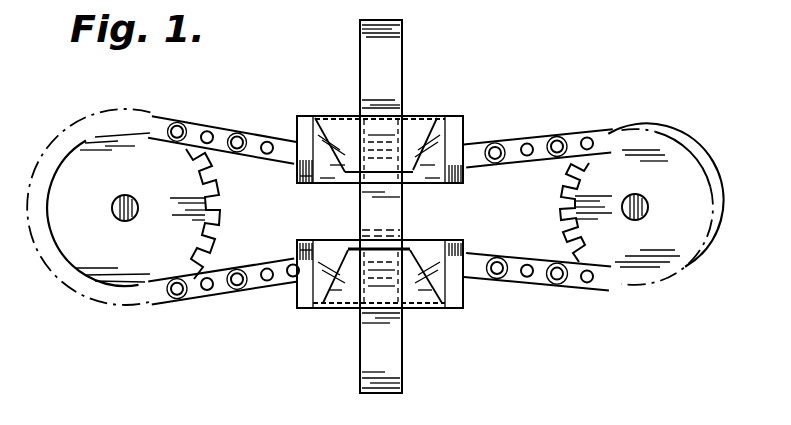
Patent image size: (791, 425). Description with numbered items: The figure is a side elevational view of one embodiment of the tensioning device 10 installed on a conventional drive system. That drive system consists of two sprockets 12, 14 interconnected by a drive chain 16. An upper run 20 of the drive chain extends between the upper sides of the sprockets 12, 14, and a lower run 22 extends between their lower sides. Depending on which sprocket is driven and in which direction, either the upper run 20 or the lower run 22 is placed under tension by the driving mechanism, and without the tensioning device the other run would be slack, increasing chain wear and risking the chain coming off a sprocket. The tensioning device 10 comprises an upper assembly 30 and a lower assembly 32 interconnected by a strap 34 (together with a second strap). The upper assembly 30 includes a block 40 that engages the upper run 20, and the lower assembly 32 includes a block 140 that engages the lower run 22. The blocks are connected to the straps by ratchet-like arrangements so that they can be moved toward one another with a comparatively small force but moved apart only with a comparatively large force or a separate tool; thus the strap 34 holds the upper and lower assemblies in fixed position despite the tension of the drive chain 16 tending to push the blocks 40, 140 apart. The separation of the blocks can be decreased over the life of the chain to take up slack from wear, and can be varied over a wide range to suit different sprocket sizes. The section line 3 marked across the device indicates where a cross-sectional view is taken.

The section line 3- 3 is at (346, 70).
The tensioning device 10 is at (428, 95).
The sprocket 12 is at (82, 172).
The sprocket 14 is at (656, 172).
The drive chain 16 is at (238, 112).
The upper run 20 is at (492, 141).
The lower run 22 is at (512, 281).
The upper assembly 30 is at (307, 108).
The lower assembly 32 is at (307, 312).
The strap 34 is at (388, 351).
The block 40 is at (311, 186).
The block 140 is at (321, 243).